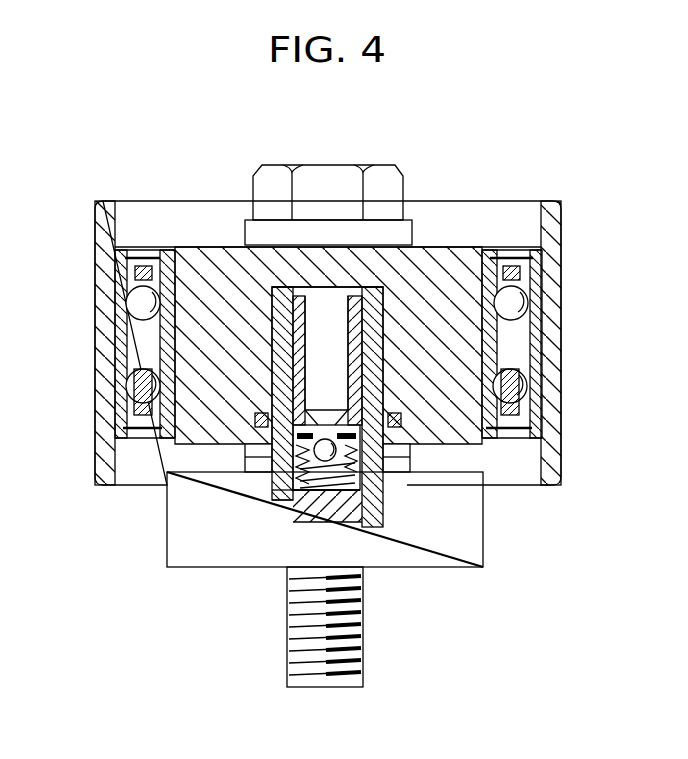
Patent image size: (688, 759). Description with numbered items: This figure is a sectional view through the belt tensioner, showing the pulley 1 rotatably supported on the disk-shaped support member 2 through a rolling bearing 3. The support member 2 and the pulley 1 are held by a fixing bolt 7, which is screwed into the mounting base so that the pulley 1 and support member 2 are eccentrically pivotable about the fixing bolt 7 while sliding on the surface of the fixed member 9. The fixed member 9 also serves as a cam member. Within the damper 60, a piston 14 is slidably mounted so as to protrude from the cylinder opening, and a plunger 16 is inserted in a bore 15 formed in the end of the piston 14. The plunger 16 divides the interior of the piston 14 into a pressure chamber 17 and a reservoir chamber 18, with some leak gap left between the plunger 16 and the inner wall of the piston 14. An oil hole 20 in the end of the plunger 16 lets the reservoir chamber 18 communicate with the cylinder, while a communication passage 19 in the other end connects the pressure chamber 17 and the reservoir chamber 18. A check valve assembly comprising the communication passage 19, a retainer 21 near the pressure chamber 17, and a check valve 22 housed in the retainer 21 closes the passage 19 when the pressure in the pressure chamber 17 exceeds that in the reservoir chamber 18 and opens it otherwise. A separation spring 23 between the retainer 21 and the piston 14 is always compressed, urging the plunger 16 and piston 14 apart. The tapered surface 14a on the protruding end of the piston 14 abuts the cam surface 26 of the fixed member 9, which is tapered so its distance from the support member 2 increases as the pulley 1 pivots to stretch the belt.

The pulley 1 is at (556, 248).
The support member 2 is at (437, 275).
The rolling bearing 3 is at (513, 250).
The fixing bolt 7 is at (297, 662).
The fixed member 9 is at (262, 548).
The piston 14 is at (385, 490).
The tapered surface 14a is at (332, 490).
The bore 15 is at (372, 358).
The plunger 16 is at (300, 370).
The pressure chamber 17 is at (276, 490).
The reservoir chamber 18 is at (335, 313).
The communication passage 19 is at (276, 482).
The oil hole 20 is at (302, 290).
The retainer 21 is at (362, 446).
The check valve 22 is at (378, 475).
The separation spring 23 is at (332, 492).
The cam surface 26 is at (416, 543).
The damper 60 is at (271, 341).